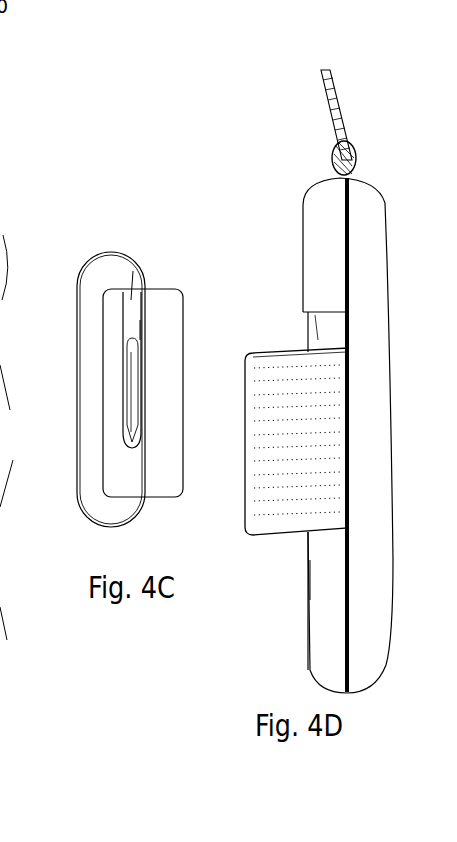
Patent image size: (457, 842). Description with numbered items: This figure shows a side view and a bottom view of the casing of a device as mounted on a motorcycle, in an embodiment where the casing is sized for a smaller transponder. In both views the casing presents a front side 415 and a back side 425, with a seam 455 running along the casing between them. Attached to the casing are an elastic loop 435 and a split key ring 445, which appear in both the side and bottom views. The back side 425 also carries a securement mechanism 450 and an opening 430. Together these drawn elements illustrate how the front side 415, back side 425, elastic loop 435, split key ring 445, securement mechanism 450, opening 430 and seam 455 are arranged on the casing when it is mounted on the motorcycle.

In FIG. 4C, the front side 415 is at (167, 482).
In FIG. 4D, the front side 415 is at (377, 237).
In FIG. 4D, the back side 425 is at (330, 583).
In FIG. 4D, the opening 430 is at (315, 315).
In FIG. 4C, the elastic loop 435 is at (133, 271).
In FIG. 4D, the elastic loop 435 is at (332, 160).
In FIG. 4C, the split key ring 445 is at (113, 416).
In FIG. 4D, the split key ring 445 is at (327, 92).
In FIG. 4C, the securement mechanism 450 is at (133, 271).
In FIG. 4D, the securement mechanism 450 is at (282, 345).
In FIG. 4C, the seam 455 is at (139, 331).
In FIG. 4D, the seam 455 is at (355, 665).